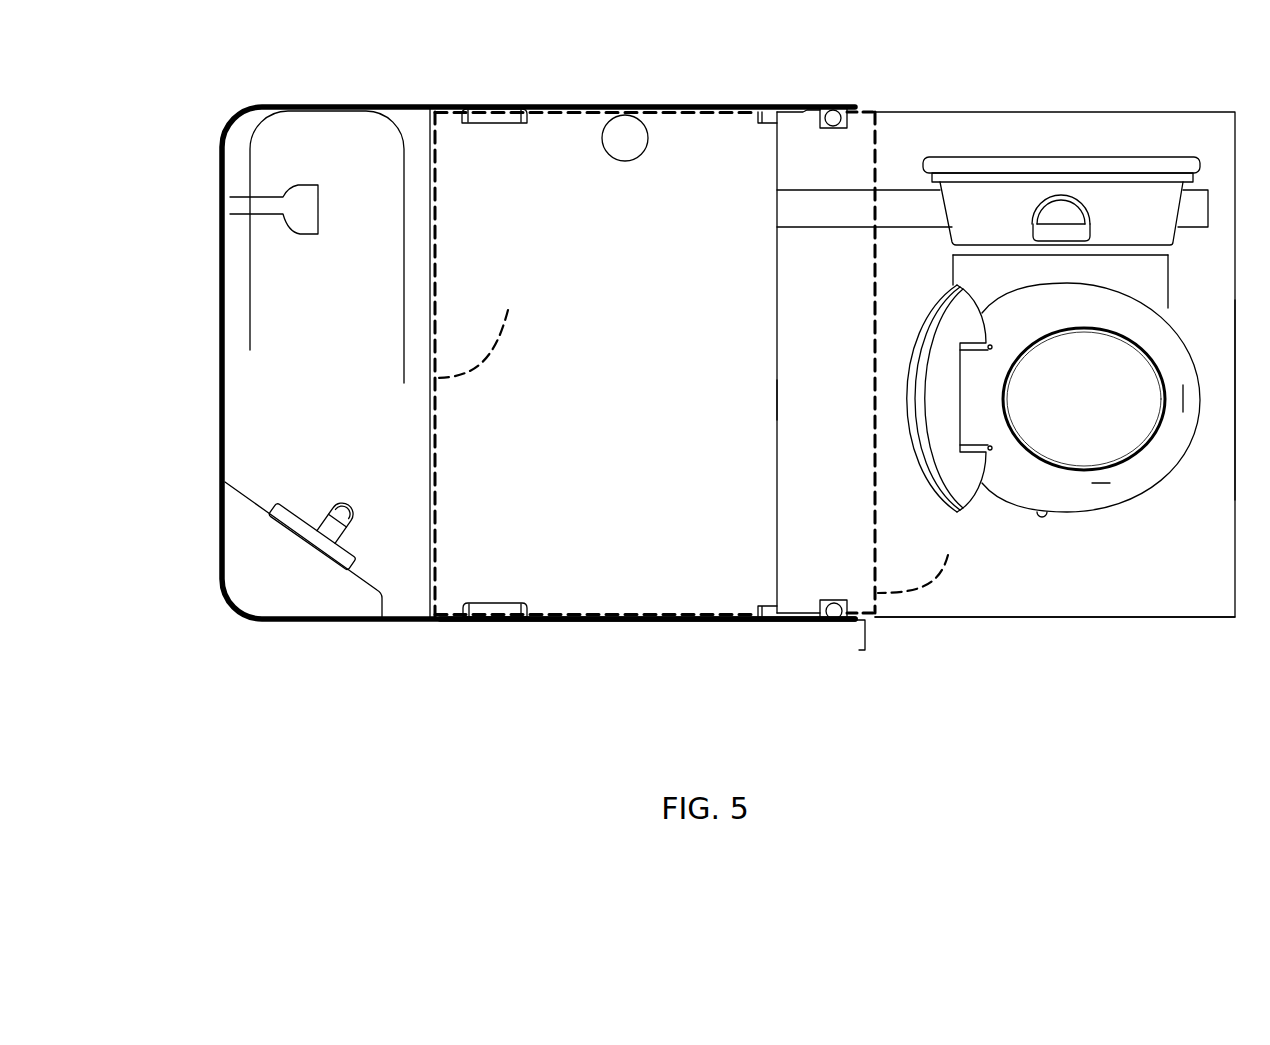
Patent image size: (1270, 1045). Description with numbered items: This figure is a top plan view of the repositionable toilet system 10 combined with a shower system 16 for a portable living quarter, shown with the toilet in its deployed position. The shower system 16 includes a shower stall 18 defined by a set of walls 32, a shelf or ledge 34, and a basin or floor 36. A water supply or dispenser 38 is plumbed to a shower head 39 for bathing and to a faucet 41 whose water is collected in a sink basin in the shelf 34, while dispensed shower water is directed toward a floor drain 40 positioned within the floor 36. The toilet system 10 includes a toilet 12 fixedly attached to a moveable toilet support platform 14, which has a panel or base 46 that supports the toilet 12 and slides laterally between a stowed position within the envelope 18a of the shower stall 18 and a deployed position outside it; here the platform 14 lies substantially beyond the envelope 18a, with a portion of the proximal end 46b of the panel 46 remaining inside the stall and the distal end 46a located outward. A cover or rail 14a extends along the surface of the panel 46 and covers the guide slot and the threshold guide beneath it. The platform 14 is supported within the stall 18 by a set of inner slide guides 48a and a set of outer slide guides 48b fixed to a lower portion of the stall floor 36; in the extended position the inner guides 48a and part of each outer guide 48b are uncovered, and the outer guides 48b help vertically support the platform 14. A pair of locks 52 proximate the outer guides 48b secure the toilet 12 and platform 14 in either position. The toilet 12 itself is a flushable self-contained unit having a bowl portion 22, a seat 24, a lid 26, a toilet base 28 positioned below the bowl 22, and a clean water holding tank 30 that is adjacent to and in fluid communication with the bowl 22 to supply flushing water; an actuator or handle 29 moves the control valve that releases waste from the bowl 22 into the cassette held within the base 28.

The repositionable toilet system 10 is at (993, 694).
The toilet 12 is at (1147, 510).
The moveable toilet support platform 14 is at (1062, 590).
The cover or rail 14a is at (815, 208).
The shower system 16 is at (607, 624).
The shower stall 18 is at (448, 492).
The envelope of the shower stall 18a is at (696, 438).
The bowl portion 22 is at (1050, 412).
The seat 24 is at (1170, 367).
The lid 26 is at (908, 375).
The toilet base 28 is at (958, 275).
The actuator or handle 29 is at (1063, 222).
The clean water holding tank 30 is at (987, 203).
The walls 32 is at (219, 278).
The shelf or ledge 34 is at (336, 338).
The basin or floor 36 is at (599, 392).
The water supply or dispenser 38 is at (292, 545).
The shower head 39 is at (307, 190).
The floor drain 40 is at (623, 162).
The faucet 41 is at (332, 488).
The panel or base 46 is at (834, 512).
The distal end of panel 46a is at (1226, 645).
The proximal end of panel 46b is at (765, 401).
The inner supports or slide guides 48a is at (488, 124).
The outer supports or slide guides 48b is at (760, 124).
The locks 52 is at (833, 110).